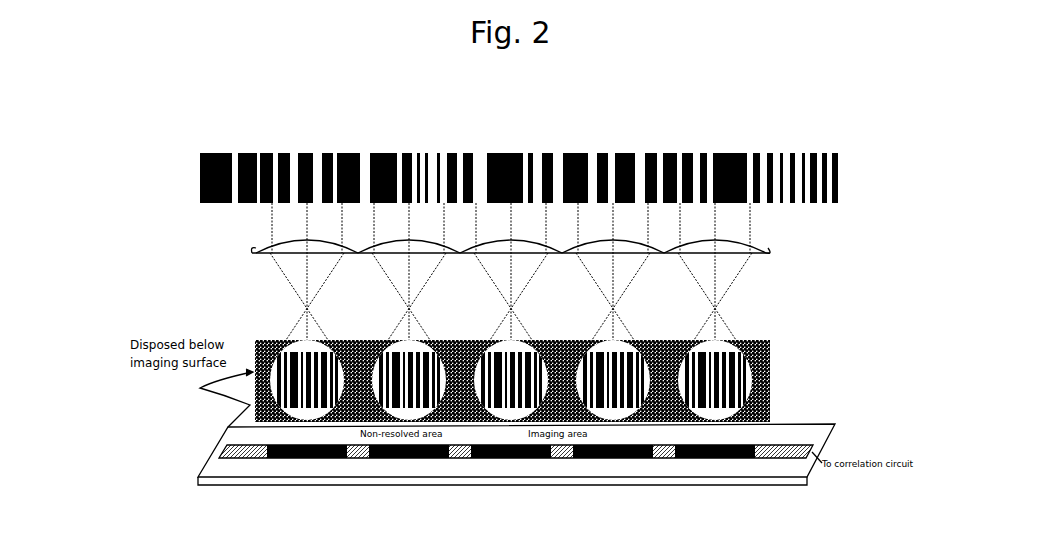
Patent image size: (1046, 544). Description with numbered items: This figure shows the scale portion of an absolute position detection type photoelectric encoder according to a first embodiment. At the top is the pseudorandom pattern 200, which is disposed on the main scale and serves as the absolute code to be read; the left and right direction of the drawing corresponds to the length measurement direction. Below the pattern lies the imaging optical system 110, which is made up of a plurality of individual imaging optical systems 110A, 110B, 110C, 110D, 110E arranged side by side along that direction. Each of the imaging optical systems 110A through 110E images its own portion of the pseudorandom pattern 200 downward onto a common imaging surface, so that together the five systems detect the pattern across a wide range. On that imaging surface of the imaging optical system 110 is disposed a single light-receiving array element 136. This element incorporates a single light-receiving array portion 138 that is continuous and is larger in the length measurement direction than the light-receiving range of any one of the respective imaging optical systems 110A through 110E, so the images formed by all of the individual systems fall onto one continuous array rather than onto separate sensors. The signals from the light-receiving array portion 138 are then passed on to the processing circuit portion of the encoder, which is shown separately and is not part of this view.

The pseudorandom pattern 200 is at (519, 163).
The imaging optical system 110 is at (477, 267).
The imaging optical system 110A is at (264, 256).
The imaging optical system 110B is at (366, 256).
The imaging optical system 110C is at (468, 256).
The imaging optical system 110D is at (570, 256).
The imaging optical system 110E is at (672, 256).
The light-receiving array element 136 is at (222, 442).
The light-receiving array portion 138 is at (200, 477).